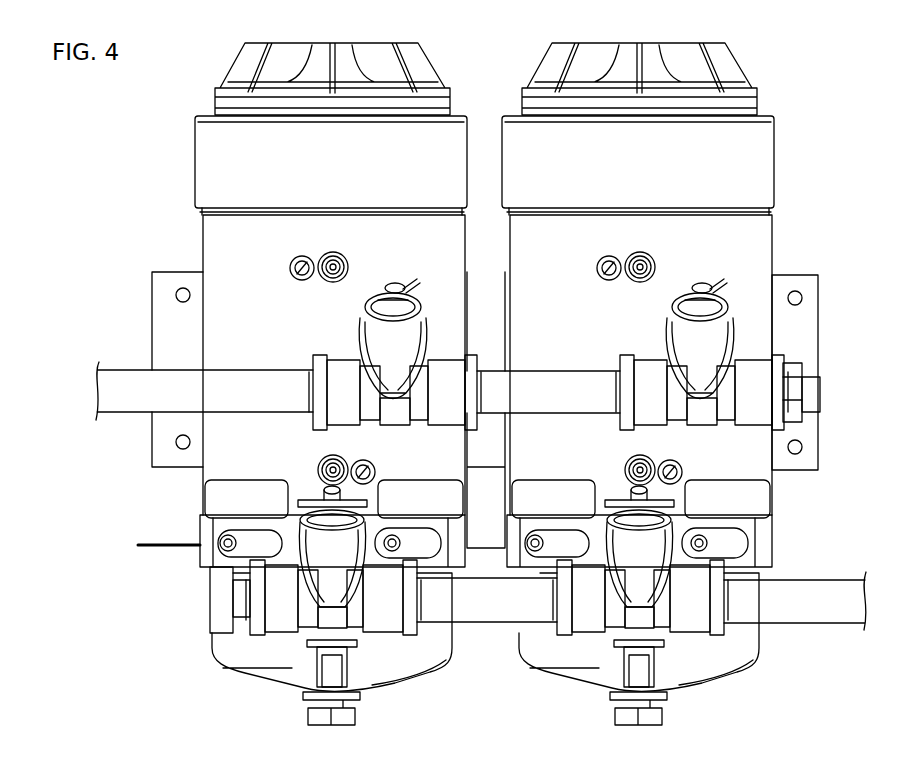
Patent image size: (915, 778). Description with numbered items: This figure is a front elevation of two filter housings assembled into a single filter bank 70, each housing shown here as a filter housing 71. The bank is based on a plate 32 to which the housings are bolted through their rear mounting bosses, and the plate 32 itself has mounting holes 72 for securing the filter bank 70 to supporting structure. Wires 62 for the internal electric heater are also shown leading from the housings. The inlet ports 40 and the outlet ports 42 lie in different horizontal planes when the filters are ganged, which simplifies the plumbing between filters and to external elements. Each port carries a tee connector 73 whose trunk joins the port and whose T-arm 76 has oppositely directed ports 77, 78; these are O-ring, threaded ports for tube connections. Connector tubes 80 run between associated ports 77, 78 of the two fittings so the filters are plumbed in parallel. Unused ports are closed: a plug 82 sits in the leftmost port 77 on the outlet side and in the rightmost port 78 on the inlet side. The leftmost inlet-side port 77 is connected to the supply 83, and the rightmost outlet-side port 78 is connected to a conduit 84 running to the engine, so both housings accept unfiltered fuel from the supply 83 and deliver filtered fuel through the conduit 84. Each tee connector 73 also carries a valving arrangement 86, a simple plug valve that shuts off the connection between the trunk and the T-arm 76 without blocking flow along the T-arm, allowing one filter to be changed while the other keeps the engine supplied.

The filter bank 70 is at (808, 150).
The filter housing 71 is at (770, 230).
The plate 32 is at (803, 275).
The mounting holes 72 is at (803, 298).
The wires 62 is at (162, 547).
The inlet ports 40 is at (430, 336).
The outlet ports 42 is at (602, 540).
The valving arrangement 86 is at (370, 307).
The port 77 is at (313, 397).
The T-arm 76 is at (447, 357).
The port 78 is at (478, 393).
The plug 82 is at (243, 592).
The connector tubes 80 is at (536, 400).
The supply 83 is at (112, 372).
The conduit 84 is at (837, 588).
The tee connectors 73 is at (330, 567).